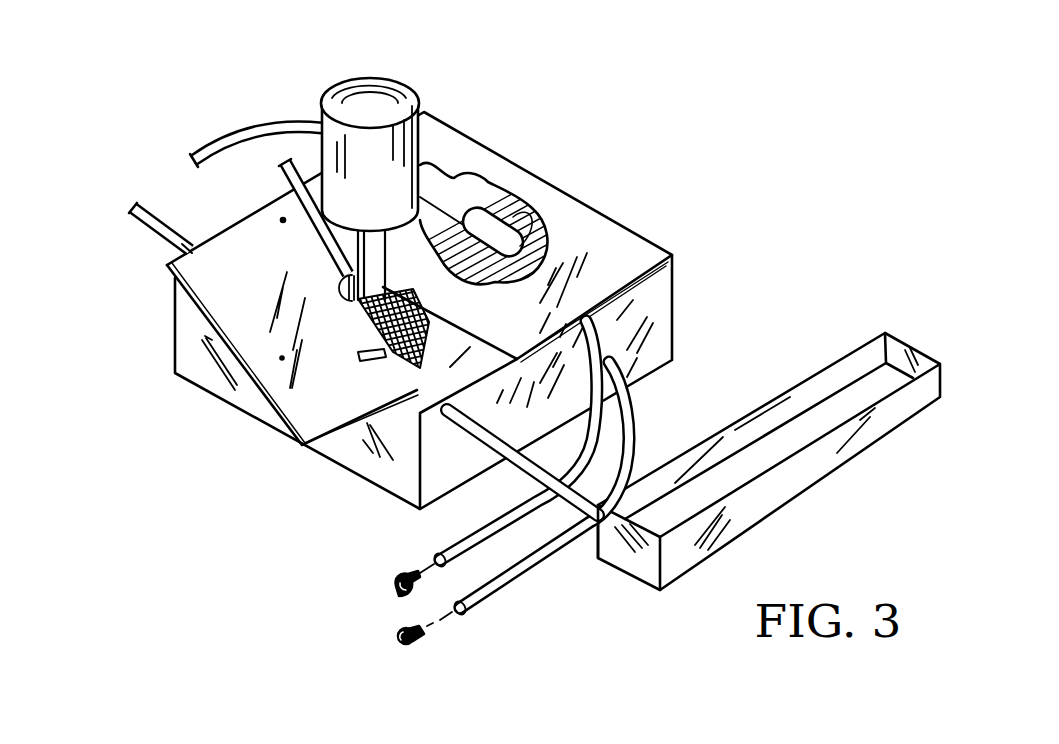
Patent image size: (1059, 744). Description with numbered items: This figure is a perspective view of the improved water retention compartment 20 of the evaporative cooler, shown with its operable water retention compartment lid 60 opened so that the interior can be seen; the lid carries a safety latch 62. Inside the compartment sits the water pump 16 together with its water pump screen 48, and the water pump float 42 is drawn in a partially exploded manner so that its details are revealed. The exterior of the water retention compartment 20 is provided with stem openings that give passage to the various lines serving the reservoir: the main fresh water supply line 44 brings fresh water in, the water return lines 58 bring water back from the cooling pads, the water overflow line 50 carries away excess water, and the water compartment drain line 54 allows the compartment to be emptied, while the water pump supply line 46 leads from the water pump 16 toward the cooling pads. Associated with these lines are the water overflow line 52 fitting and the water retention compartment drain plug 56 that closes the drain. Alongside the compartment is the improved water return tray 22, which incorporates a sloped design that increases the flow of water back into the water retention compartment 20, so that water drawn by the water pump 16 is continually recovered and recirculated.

The water pump 16 is at (363, 100).
The water retention compartment 20 is at (174, 291).
The water return tray 22 is at (783, 500).
The water pump float 42 is at (508, 222).
The main fresh water supply line 44 is at (213, 142).
The water pump supply line 46 is at (290, 218).
The water pump screen 48 is at (427, 397).
The water overflow line 50 is at (610, 353).
The water overflow line 52 is at (393, 578).
The water compartment drain line 54 is at (607, 505).
The water retention compartment drain plug 56 is at (403, 648).
The water return lines 58 is at (167, 243).
The water retention compartment lid 60 is at (245, 338).
The safety latch 62 is at (472, 313).